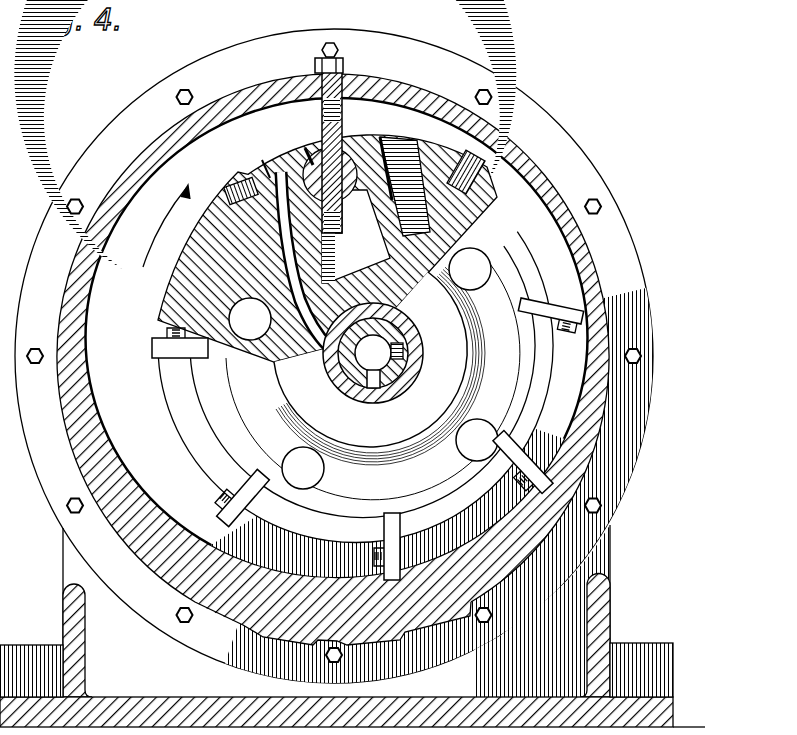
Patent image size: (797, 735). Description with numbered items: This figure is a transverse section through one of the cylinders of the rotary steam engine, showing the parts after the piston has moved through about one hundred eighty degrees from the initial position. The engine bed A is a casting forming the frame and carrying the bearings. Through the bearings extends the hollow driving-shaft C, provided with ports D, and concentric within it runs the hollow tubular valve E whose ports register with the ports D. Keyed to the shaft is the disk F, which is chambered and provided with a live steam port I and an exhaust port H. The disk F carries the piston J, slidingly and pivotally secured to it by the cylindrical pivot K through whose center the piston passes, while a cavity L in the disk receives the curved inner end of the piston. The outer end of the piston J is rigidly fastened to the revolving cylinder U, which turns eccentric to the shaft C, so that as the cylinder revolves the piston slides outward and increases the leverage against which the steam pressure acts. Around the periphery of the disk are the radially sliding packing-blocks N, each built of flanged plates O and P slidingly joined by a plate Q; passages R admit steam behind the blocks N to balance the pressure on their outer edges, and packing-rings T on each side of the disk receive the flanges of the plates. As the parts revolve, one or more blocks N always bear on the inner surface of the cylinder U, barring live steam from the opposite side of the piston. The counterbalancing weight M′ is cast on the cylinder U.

The piston J is at (366, 88).
The exhaust port H is at (405, 176).
The revolving cylinder U is at (334, 363).
The live steam port I is at (267, 172).
The pivot K is at (306, 150).
The flanged plate P is at (238, 174).
The flanged plate O is at (230, 186).
The plate Q is at (170, 226).
The disk F is at (188, 254).
The passage R is at (163, 330).
The packing-block N is at (165, 352).
The hollow driving-shaft C is at (404, 347).
The hollow tubular valve E is at (400, 352).
The port D is at (336, 366).
The cavity L is at (356, 236).
The packing-ring T is at (311, 514).
The counter balancing weight M′ is at (278, 640).
The engine bed A is at (516, 706).